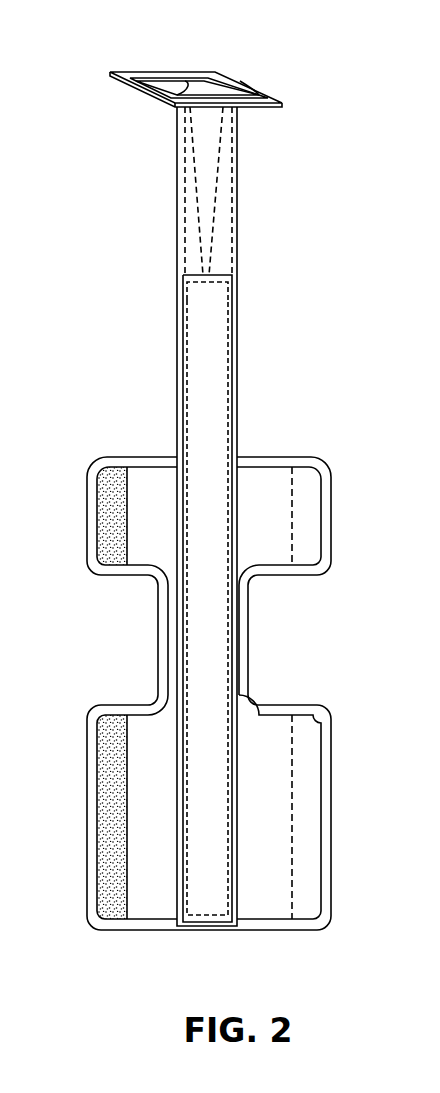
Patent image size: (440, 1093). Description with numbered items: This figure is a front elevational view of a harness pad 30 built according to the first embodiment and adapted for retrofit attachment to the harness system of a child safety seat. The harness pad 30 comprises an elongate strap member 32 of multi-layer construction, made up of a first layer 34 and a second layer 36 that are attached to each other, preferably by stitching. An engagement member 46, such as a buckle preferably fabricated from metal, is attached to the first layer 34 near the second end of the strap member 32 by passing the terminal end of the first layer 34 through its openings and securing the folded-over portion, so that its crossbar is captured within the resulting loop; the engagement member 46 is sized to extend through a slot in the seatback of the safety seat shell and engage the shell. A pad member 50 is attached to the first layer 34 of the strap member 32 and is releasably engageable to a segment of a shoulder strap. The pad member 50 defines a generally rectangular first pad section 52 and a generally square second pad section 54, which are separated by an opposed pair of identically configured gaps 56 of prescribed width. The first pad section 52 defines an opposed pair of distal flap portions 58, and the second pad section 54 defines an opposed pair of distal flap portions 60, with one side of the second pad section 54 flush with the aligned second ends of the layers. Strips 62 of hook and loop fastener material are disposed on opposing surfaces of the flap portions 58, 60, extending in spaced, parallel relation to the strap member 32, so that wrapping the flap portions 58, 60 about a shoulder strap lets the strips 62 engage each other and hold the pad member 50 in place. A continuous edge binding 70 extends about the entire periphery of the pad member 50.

The harness pad 30 is at (299, 141).
The strap member 32 is at (258, 272).
The first layer 34 is at (238, 220).
The second layer 36 is at (248, 577).
The engagement member 46 is at (176, 72).
The pad member 50 is at (308, 436).
The first pad section 52 is at (112, 440).
The second pad section 54 is at (128, 942).
The gaps 56 is at (126, 655).
The distal flap portions 58 is at (140, 475).
The distal flap portions 60 is at (147, 731).
The strips of hook and loop fastener material 62 is at (112, 515).
The edge binding 70 is at (272, 922).